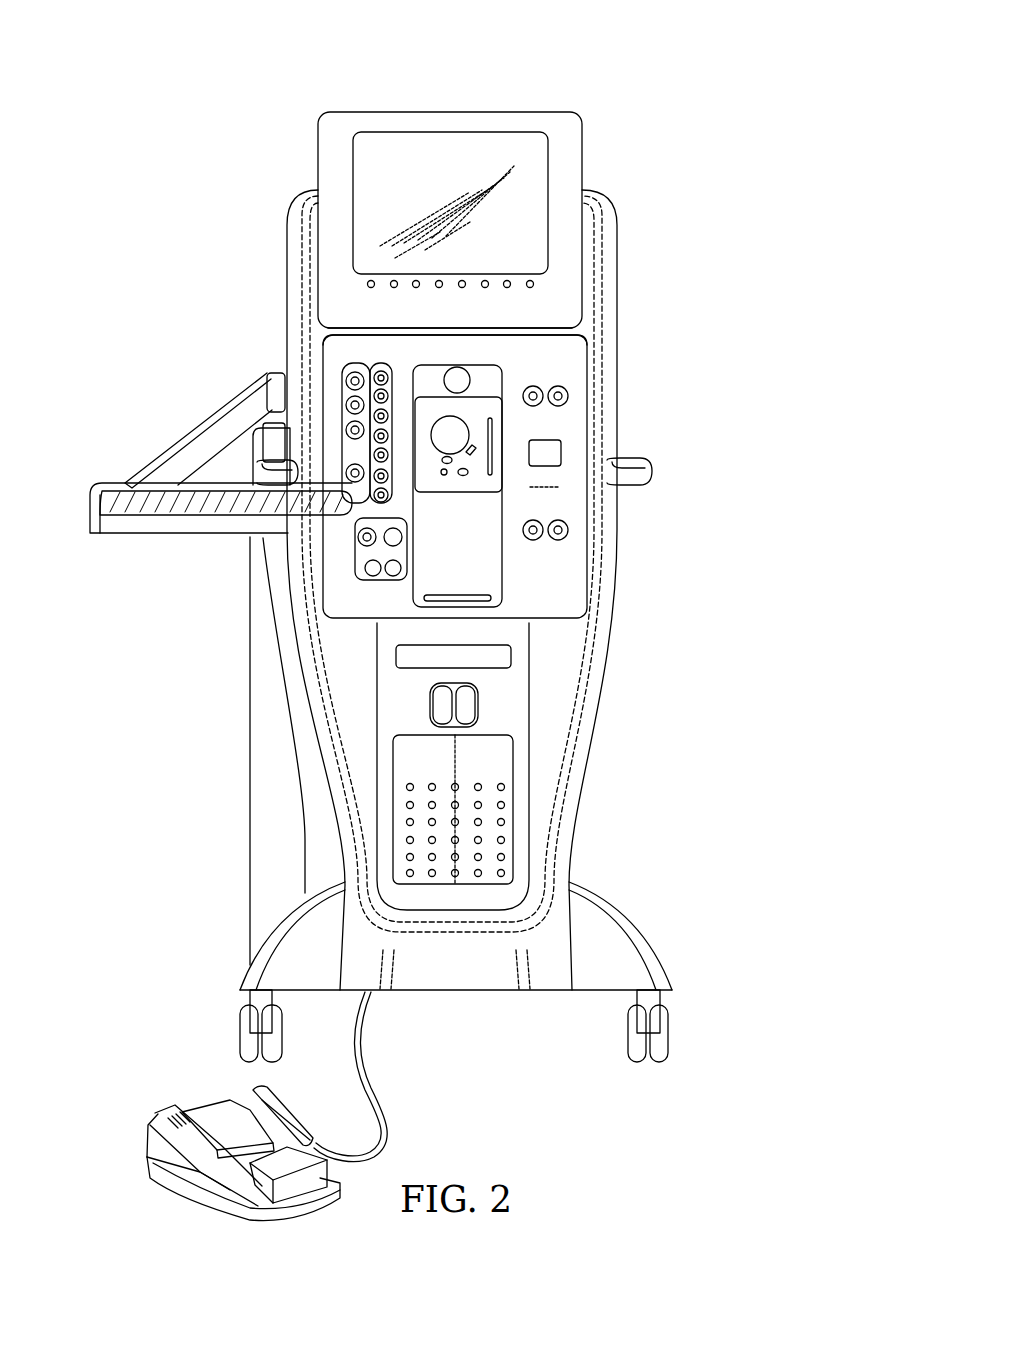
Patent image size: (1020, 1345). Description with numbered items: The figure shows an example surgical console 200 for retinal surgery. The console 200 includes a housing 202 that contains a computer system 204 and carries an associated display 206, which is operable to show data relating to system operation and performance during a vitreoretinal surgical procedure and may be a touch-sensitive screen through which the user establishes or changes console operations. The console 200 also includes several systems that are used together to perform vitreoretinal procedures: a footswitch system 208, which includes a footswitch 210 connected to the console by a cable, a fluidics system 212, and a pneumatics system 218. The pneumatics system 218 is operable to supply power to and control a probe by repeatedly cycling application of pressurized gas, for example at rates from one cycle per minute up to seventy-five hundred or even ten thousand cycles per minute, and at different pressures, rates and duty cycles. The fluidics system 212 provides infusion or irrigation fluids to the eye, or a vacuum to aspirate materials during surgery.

The surgical console 200 is at (580, 74).
The housing 202 is at (604, 730).
The computer system 204 is at (634, 520).
The display 206 is at (316, 163).
The footswitch system 208 is at (130, 1108).
The footswitch 210 is at (215, 1110).
The fluidics system 212 is at (510, 422).
The pneumatics system 218 is at (368, 360).